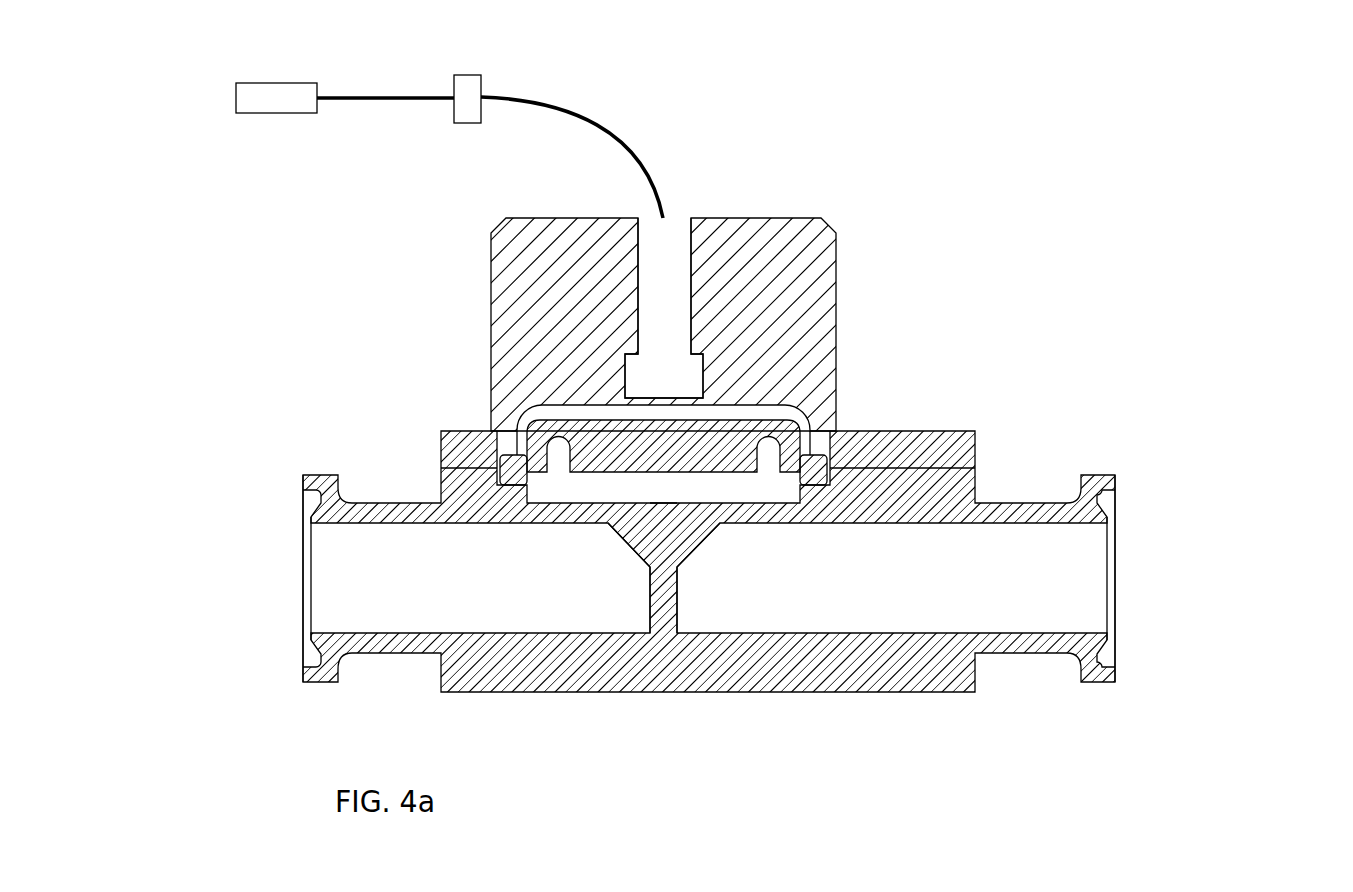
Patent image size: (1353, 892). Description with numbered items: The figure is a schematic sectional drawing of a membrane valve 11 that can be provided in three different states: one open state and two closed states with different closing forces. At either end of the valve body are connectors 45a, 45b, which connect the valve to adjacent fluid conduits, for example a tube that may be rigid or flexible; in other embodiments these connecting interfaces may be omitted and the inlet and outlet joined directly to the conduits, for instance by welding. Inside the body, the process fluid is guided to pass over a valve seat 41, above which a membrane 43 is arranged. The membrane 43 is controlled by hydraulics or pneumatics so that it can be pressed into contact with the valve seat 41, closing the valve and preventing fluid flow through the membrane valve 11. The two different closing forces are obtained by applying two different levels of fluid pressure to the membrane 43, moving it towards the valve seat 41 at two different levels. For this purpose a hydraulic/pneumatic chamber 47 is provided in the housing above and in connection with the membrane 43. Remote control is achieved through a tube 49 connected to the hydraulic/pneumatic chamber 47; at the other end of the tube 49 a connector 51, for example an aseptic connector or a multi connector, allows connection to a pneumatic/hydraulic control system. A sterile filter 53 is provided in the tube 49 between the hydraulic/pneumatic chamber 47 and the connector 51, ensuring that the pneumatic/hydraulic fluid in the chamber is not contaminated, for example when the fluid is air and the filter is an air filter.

The membrane valve 11 is at (869, 148).
The valve seat 41 is at (650, 500).
The membrane 43 is at (680, 458).
The connector 45a is at (300, 483).
The connector 45b is at (1112, 477).
The hydraulic/pneumatic chamber 47 is at (657, 325).
The tube 49 is at (607, 128).
The connector 51 is at (253, 113).
The sterile filter 53 is at (463, 123).